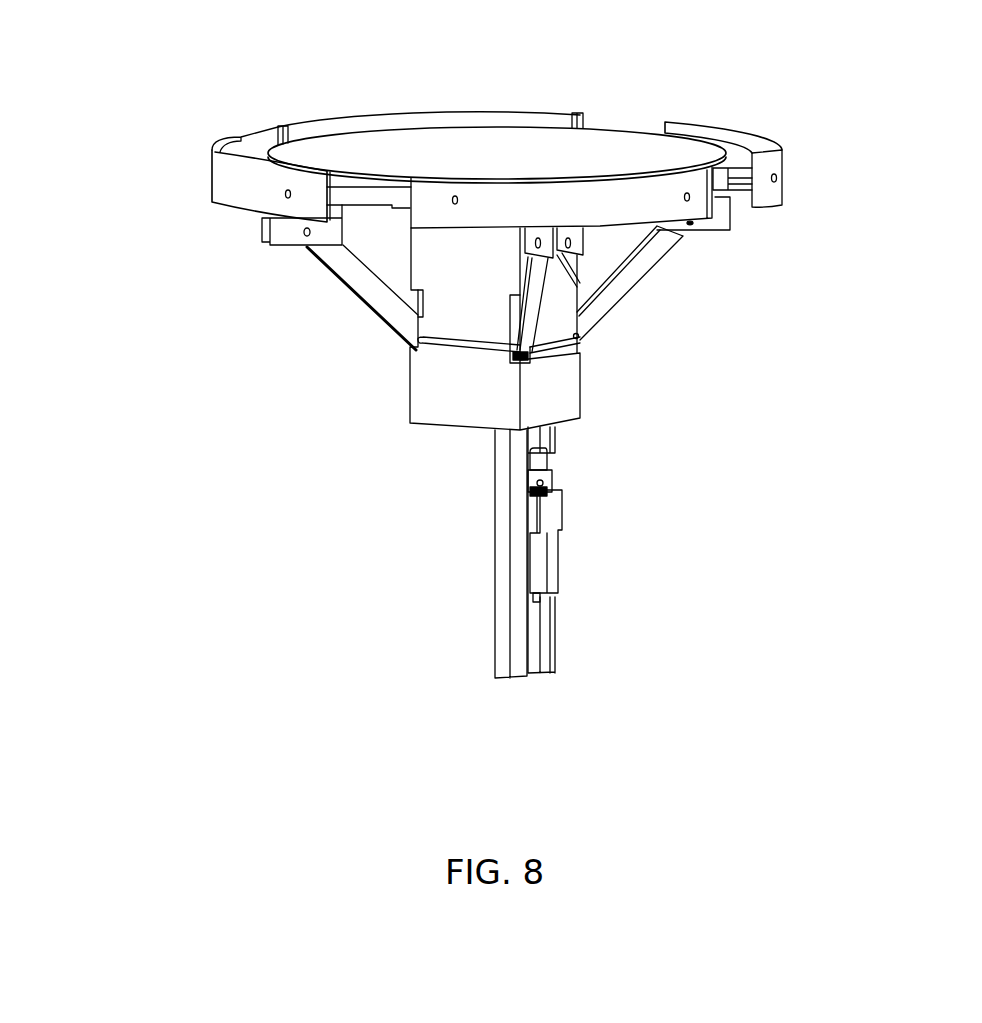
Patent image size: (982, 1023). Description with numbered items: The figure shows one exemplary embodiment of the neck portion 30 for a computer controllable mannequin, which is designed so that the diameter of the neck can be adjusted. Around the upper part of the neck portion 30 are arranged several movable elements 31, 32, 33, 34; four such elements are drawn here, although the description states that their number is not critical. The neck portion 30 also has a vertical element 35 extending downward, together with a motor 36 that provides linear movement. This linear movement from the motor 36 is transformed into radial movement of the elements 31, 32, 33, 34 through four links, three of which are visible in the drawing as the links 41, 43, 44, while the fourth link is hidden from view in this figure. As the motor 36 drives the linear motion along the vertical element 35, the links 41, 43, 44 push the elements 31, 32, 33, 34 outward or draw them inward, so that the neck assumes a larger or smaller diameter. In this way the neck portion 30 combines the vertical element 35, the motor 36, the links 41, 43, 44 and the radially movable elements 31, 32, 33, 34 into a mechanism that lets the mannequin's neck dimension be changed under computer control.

The neck portion 30 is at (303, 440).
The neck element 31 is at (197, 179).
The neck element 32 is at (305, 115).
The neck element 33 is at (782, 163).
The neck element 34 is at (650, 213).
The vertical element 35 is at (557, 442).
The motor 36 is at (552, 557).
The link 41 is at (352, 280).
The link 43 is at (650, 260).
The link 44 is at (577, 340).